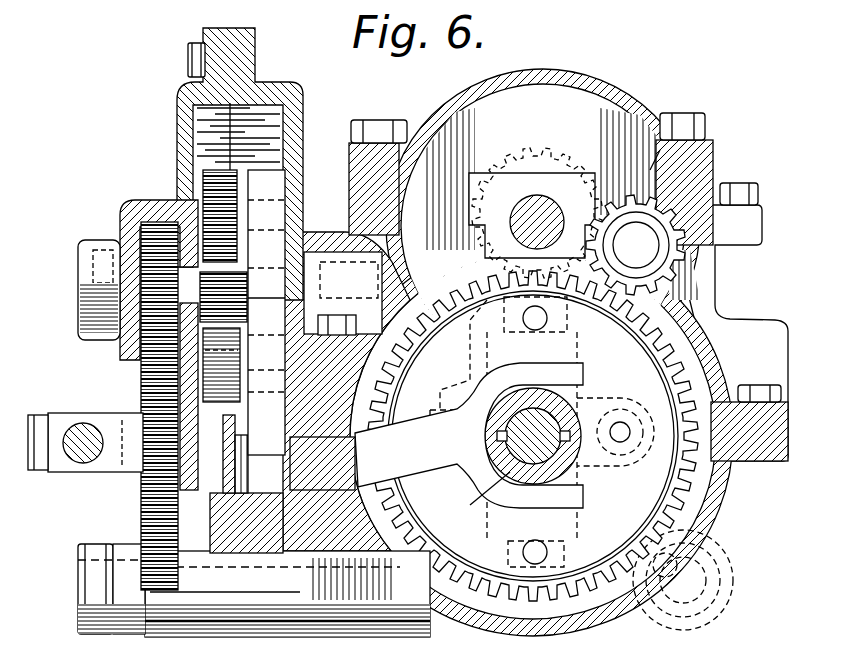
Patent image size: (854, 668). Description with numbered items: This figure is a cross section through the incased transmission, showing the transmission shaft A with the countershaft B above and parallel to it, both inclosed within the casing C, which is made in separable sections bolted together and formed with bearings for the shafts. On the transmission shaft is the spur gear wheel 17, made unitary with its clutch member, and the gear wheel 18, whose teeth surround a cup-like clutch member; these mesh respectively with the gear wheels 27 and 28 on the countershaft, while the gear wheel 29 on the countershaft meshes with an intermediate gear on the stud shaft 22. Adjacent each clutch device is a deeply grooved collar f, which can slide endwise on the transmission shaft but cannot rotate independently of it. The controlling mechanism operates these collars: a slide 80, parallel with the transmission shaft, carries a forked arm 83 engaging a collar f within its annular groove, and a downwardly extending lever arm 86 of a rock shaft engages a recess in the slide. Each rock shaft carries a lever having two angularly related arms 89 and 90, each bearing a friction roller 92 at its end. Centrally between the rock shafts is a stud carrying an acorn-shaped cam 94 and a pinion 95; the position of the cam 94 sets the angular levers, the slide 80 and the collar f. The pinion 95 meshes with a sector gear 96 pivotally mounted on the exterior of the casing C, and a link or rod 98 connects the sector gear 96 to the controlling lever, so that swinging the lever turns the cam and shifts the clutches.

The spur gear wheel 17 is at (461, 332).
The gear wheel 18 is at (468, 280).
The stud shaft 22 is at (636, 245).
The gear wheel 27 is at (464, 242).
The gear wheel 28 is at (630, 245).
The gear wheel 29 is at (639, 171).
The slide 80 is at (160, 511).
The forked arm 83 is at (410, 432).
The lever arm 86 is at (273, 464).
The lever arm 89 is at (303, 153).
The lever arm 90 is at (247, 352).
The friction roller 92 is at (247, 402).
The cam 94 is at (220, 216).
The pinion 95 is at (155, 214).
The sector gear 96 is at (160, 474).
The link or rod 98 is at (83, 422).
The transmission shaft A is at (563, 412).
The countershaft B is at (470, 193).
The casing C is at (630, 115).
The collar f is at (480, 506).